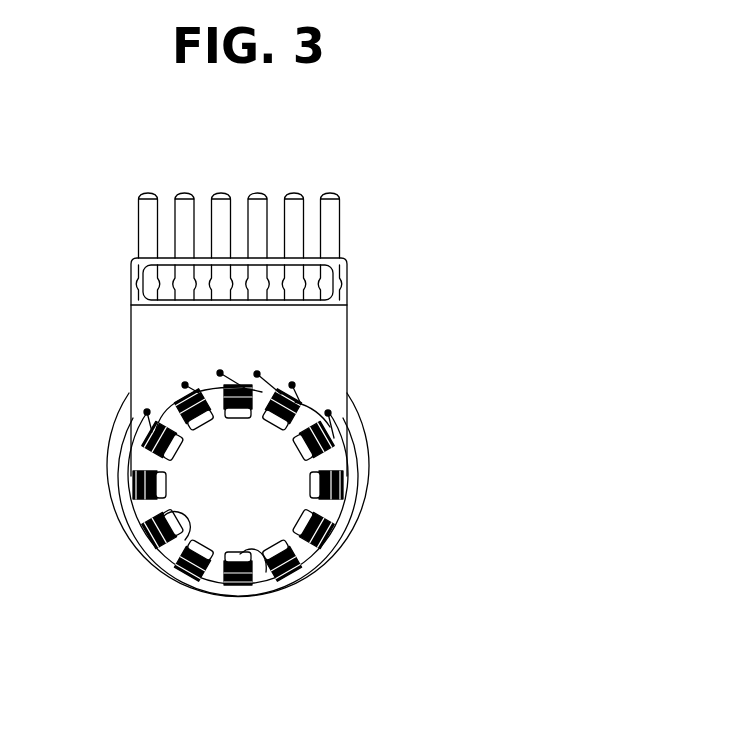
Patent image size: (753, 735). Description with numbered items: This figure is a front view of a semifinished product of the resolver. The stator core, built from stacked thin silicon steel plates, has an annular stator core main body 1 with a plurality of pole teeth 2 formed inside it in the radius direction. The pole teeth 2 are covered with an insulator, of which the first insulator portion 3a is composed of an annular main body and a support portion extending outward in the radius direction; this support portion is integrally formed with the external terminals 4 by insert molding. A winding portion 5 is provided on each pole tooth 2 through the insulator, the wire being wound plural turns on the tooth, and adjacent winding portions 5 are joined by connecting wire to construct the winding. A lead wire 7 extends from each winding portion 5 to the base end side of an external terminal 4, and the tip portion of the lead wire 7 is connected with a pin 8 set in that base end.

The stator core main body 1 is at (358, 517).
The pole teeth 2 is at (185, 540).
The first insulator portion 3a is at (157, 323).
The external terminals 4 is at (293, 200).
The winding portion 5 is at (133, 478).
The lead wire 7 is at (144, 418).
The pin 8 is at (184, 384).